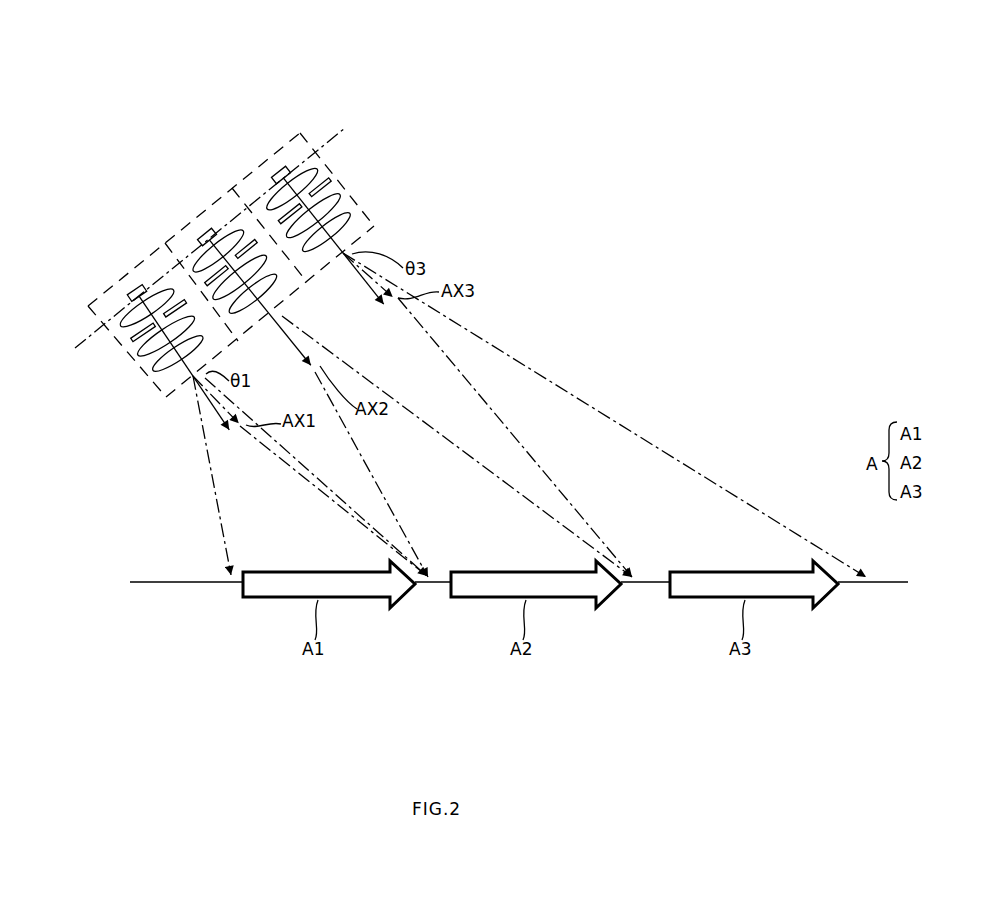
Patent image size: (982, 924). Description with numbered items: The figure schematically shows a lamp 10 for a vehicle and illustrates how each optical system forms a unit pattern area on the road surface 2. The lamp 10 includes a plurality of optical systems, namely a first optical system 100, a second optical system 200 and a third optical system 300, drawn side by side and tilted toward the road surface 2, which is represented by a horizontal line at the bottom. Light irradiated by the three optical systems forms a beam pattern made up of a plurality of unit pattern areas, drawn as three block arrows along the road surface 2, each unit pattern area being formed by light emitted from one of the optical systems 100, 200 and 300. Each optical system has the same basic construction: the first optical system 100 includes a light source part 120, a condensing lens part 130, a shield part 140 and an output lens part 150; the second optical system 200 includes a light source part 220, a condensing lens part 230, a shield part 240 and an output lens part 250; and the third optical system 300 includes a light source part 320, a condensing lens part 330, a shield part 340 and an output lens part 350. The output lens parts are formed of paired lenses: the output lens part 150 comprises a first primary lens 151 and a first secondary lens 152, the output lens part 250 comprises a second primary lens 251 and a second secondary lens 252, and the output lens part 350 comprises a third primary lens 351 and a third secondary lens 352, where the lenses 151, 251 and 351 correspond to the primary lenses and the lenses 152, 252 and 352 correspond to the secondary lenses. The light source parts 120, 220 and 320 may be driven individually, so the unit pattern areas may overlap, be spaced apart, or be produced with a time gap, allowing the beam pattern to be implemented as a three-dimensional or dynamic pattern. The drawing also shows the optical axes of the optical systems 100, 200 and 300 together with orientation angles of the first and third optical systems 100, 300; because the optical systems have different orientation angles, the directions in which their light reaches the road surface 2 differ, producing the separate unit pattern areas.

The road surface 2 is at (138, 580).
The lamp 10 is at (90, 8).
The first optical system 100 is at (137, 257).
The light source part 120 is at (130, 289).
The condensing lens part 130 is at (104, 320).
The shield part 140 is at (120, 345).
The output lens part 150 is at (55, 438).
The (1-1)-th lens 151 is at (146, 352).
The (1-2)-th lens 152 is at (152, 390).
The second optical system 200 is at (212, 202).
The light source part 220 is at (202, 233).
The condensing lens part 230 is at (230, 190).
The shield part 240 is at (247, 342).
The output lens part 250 is at (368, 296).
The (2-1)-th lens 251 is at (268, 290).
The (2-2)-th lens 252 is at (282, 291).
The third optical system 300 is at (281, 136).
The light source part 320 is at (276, 168).
The condensing lens part 330 is at (322, 164).
The shield part 340 is at (340, 183).
The output lens part 350 is at (437, 182).
The (3-1)-th lens 351 is at (348, 192).
The (3-2)-th lens 352 is at (360, 205).